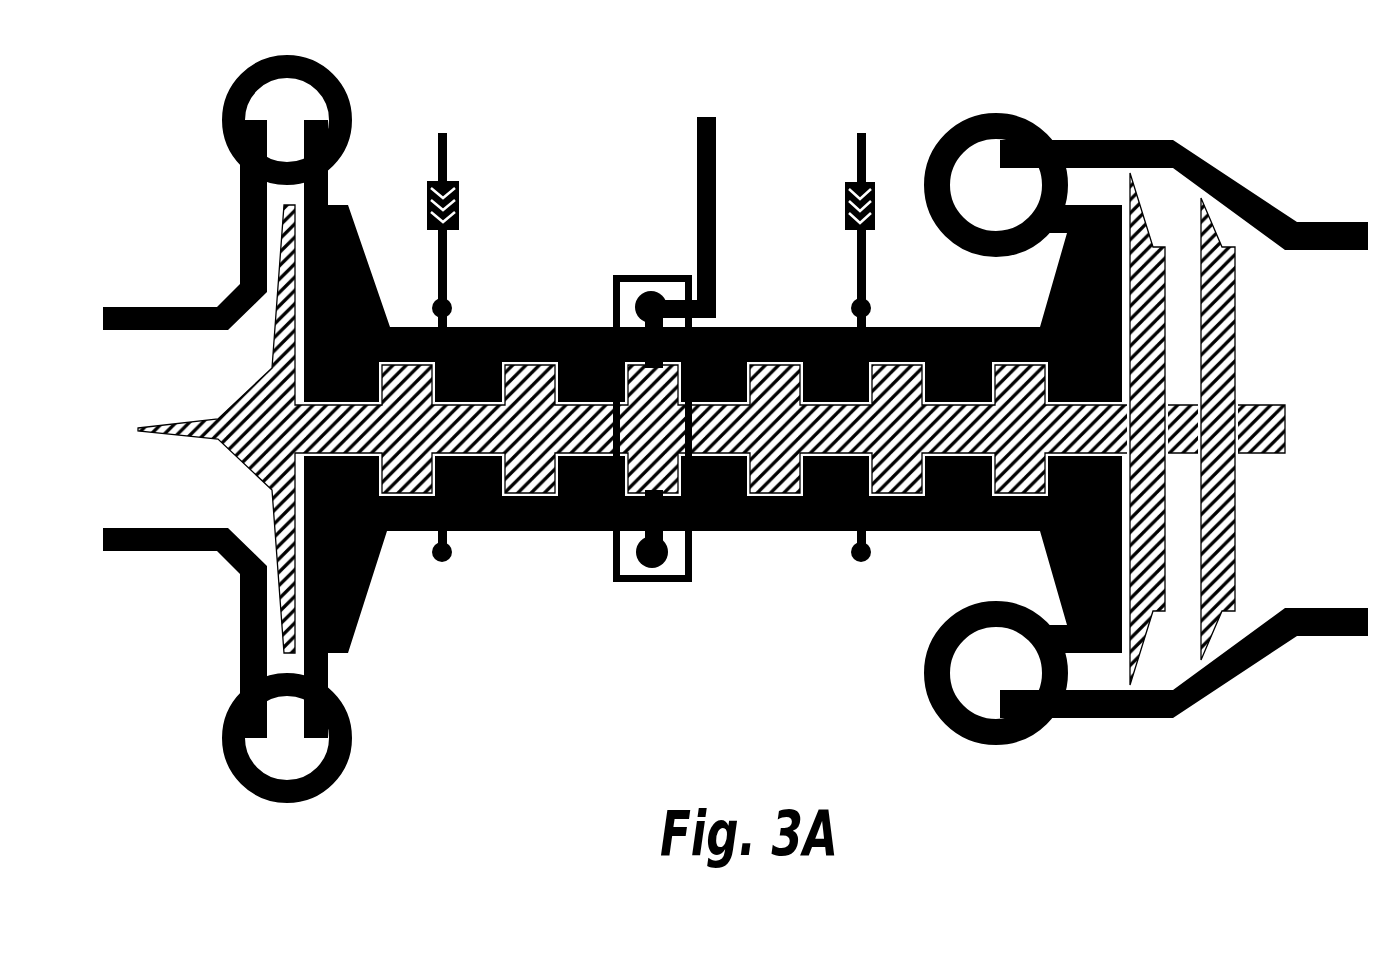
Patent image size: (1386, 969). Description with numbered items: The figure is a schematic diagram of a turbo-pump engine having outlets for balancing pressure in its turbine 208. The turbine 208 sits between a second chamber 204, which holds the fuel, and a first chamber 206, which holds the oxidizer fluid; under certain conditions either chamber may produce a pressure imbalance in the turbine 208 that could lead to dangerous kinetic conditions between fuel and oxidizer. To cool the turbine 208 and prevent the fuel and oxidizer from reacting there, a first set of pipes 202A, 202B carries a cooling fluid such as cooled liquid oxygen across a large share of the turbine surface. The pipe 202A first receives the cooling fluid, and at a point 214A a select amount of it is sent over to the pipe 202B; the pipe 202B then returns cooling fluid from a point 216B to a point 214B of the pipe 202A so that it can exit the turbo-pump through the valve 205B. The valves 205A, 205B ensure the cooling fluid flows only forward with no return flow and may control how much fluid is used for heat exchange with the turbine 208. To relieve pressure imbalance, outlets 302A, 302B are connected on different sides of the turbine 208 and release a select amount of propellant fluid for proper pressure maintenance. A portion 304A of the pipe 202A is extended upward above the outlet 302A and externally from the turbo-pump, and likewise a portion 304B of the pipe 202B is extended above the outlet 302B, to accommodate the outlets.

The pipe 202A is at (447, 264).
The pipe 202B is at (450, 545).
The second chamber 204 is at (197, 490).
The valve 205A is at (457, 183).
The valve 205B is at (845, 183).
The first chamber 206 is at (1254, 592).
The turbine 208 is at (282, 320).
The point 214A is at (453, 311).
The point 214B is at (851, 307).
The point 216B is at (861, 563).
The outlet 302A is at (697, 172).
The outlet 302B is at (775, 478).
The portion of pipe 304A is at (648, 262).
The portion of pipe 304B is at (651, 596).